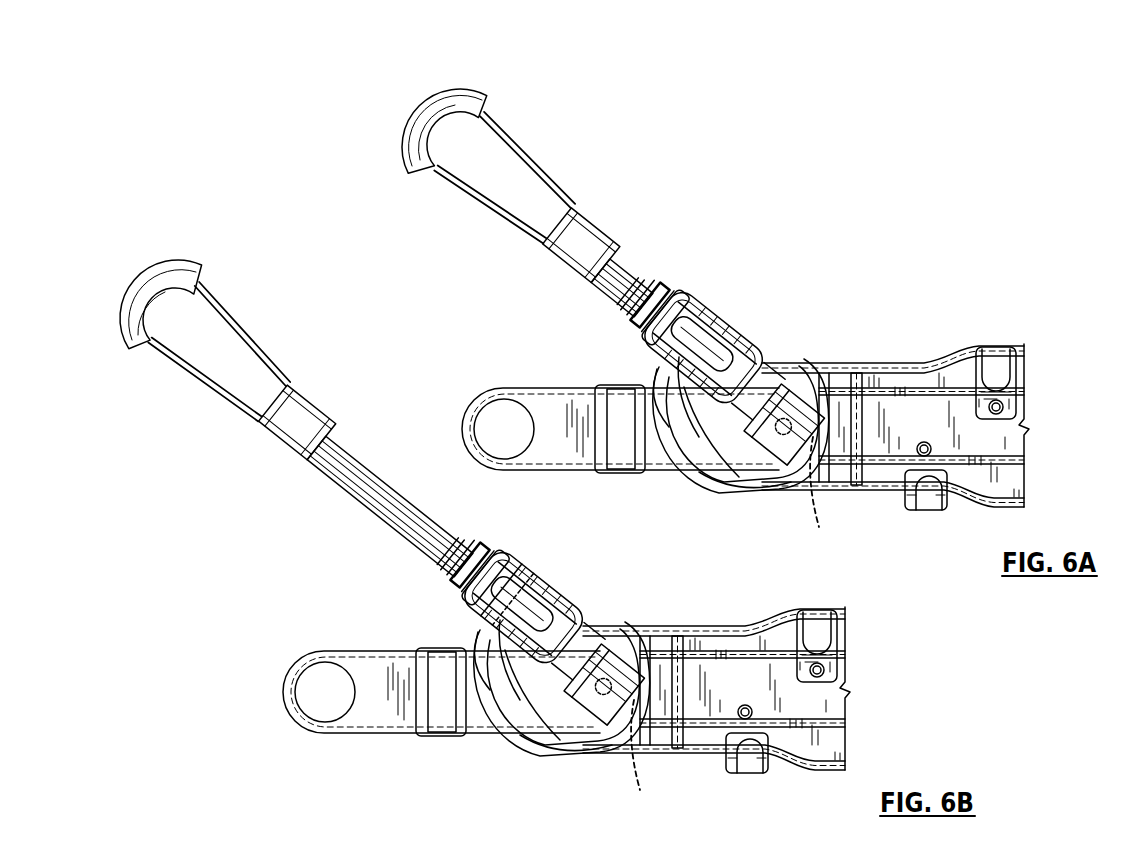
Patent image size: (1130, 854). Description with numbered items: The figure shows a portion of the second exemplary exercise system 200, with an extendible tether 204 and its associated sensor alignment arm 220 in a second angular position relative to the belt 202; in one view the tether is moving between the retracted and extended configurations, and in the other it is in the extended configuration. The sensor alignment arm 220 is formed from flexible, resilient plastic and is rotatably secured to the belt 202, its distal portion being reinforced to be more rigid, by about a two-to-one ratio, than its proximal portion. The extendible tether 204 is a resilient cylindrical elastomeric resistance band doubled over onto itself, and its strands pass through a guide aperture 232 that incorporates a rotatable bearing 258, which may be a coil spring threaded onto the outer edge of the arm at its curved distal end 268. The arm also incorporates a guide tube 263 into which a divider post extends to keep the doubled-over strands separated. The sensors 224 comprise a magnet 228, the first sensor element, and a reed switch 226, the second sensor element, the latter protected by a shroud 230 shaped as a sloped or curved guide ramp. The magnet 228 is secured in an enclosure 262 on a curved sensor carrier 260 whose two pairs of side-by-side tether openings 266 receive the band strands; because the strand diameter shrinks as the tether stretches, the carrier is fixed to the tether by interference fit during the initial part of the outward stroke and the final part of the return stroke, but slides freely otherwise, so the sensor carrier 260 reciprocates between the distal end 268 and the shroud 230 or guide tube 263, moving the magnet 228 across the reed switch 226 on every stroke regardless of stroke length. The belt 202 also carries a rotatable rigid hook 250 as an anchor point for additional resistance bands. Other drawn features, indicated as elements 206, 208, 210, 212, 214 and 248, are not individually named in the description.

In FIG. 6B, the second exemplary exercise system 200 is at (493, 509).
In FIG. 6A, the second exemplary exercise system 200 is at (670, 300).
In FIG. 6B, the belt 202 is at (762, 624).
In FIG. 6A, the belt 202 is at (900, 360).
In FIG. 6B, the extendible tether 204 is at (376, 478).
In FIG. 6A, the extendible tether 204 is at (622, 272).
In FIG. 6B, the slide block 206 is at (641, 650).
In FIG. 6A, the slide block 206 is at (821, 388).
In FIG. 6B, the rail panel 208 is at (735, 672).
In FIG. 6A, the rail panel 208 is at (940, 402).
In FIG. 6B, the rail post 210 is at (672, 750).
In FIG. 6A, the rail post 210 is at (852, 486).
In FIG. 6B, the hook 212 is at (182, 309).
In FIG. 6A, the hook 212 is at (449, 147).
In FIG. 6B, the hook cap 214 is at (140, 278).
In FIG. 6A, the hook cap 214 is at (406, 160).
In FIG. 6B, the sensor alignment arm 220 is at (558, 590).
In FIG. 6A, the sensor alignment arm 220 is at (736, 308).
In FIG. 6B, the sensor 224 is at (546, 572).
In FIG. 6A, the sensor 224 is at (721, 308).
In FIG. 6B, the reed switch 226 is at (542, 574).
In FIG. 6B, the magnet 228 is at (520, 562).
In FIG. 6B, the shroud 230 is at (566, 606).
In FIG. 6A, the shroud 230 is at (746, 330).
In FIG. 6B, the guide aperture 232 is at (454, 590).
In FIG. 6A, the guide aperture 232 is at (634, 330).
In FIG. 6B, the strap 248 is at (568, 750).
In FIG. 6A, the strap 248 is at (748, 470).
In FIG. 6B, the rigid hook 250 is at (820, 636).
In FIG. 6A, the rigid hook 250 is at (1000, 344).
In FIG. 6B, the rotatable bearing 258 is at (456, 566).
In FIG. 6A, the rotatable bearing 258 is at (636, 306).
In FIG. 6B, the sensor carrier 260 is at (521, 736).
In FIG. 6A, the sensor carrier 260 is at (704, 476).
In FIG. 6B, the enclosure 262 is at (466, 602).
In FIG. 6A, the enclosure 262 is at (646, 342).
In FIG. 6B, the guide tube 263 is at (626, 668).
In FIG. 6A, the guide tube 263 is at (805, 378).
In FIG. 6B, the tether openings 266 is at (522, 642).
In FIG. 6A, the tether openings 266 is at (680, 376).
In FIG. 6B, the distal end 268 is at (482, 562).
In FIG. 6A, the distal end 268 is at (650, 280).